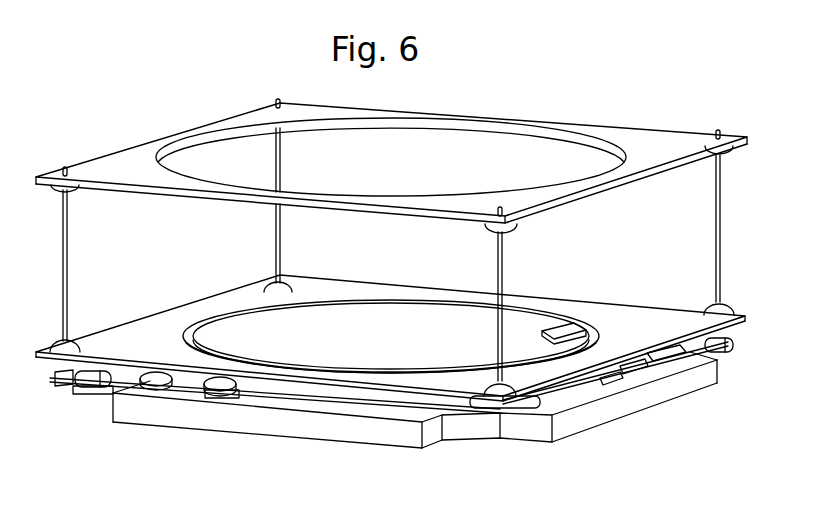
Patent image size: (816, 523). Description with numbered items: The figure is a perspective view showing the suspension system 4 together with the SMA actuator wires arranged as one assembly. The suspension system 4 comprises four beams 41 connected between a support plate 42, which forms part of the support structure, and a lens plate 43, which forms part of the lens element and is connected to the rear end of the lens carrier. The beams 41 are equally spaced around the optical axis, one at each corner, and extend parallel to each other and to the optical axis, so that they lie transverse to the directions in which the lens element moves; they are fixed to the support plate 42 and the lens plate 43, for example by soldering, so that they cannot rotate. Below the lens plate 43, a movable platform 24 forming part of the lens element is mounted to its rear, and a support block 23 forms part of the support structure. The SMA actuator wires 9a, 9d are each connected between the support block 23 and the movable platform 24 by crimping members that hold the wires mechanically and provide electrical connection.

The suspension system 4 is at (735, 222).
The beam 41 is at (283, 170).
The support plate 42 is at (657, 135).
The lens plate 43 is at (612, 313).
The movable platform 24 is at (533, 317).
The support block 23 is at (595, 417).
The SMA actuator wire 9a is at (668, 366).
The SMA actuator wire 9d is at (257, 394).